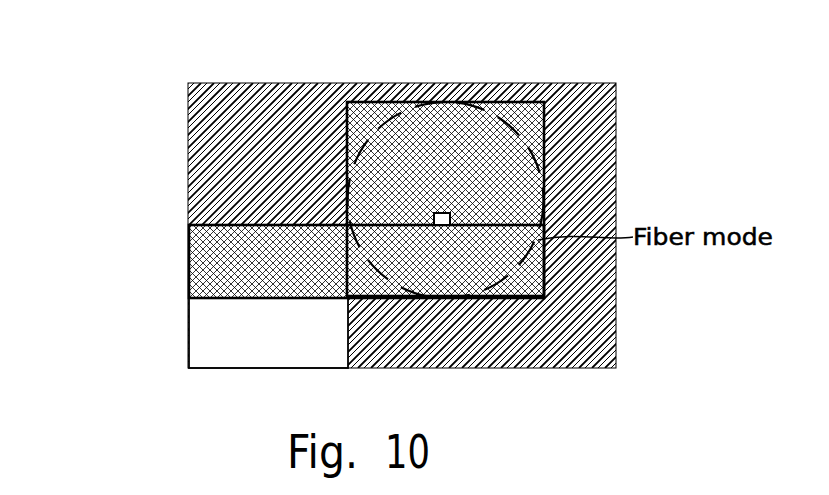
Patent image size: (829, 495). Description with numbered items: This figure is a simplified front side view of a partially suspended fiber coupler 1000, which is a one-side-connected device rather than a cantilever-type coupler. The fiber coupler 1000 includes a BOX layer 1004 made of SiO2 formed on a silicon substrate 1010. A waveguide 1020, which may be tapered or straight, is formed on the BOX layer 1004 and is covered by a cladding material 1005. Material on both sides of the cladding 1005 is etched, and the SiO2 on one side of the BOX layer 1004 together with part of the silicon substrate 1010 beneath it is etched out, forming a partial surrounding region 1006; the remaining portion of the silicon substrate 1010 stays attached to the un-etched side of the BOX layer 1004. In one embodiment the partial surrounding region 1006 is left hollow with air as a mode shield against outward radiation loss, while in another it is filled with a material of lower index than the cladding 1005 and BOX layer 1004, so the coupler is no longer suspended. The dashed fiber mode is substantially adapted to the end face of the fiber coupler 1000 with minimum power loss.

The partially suspended fiber coupler 1000 is at (156, 60).
The BOX layer 1004 is at (525, 278).
The cladding material 1005 is at (537, 121).
The partial surrounding region 1006 is at (583, 141).
The silicon substrate 1010 is at (268, 333).
The waveguide 1020 is at (441, 212).